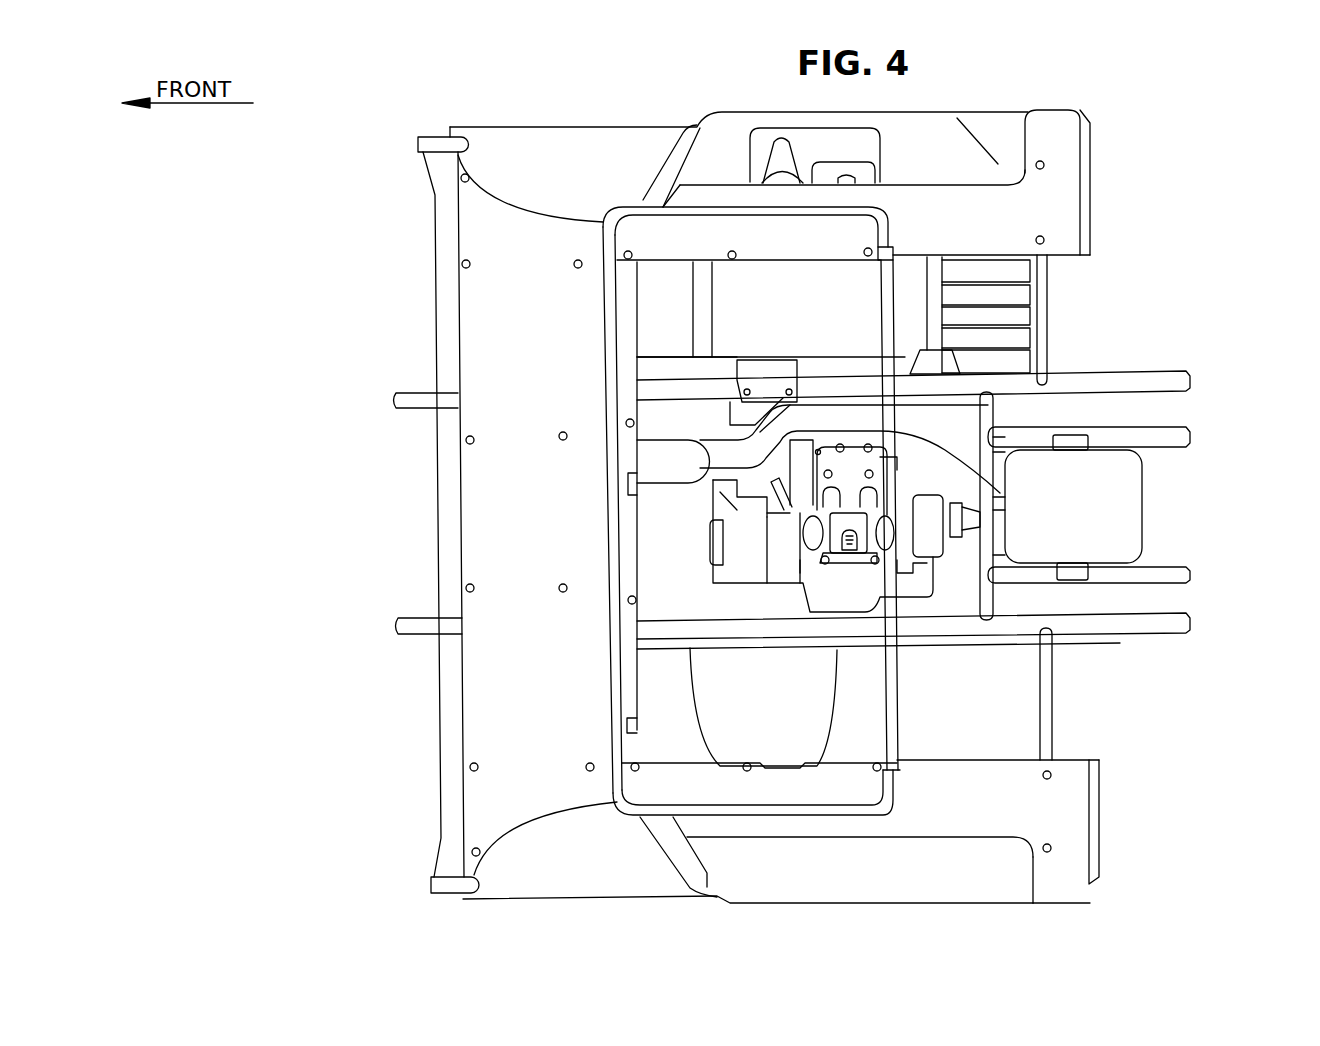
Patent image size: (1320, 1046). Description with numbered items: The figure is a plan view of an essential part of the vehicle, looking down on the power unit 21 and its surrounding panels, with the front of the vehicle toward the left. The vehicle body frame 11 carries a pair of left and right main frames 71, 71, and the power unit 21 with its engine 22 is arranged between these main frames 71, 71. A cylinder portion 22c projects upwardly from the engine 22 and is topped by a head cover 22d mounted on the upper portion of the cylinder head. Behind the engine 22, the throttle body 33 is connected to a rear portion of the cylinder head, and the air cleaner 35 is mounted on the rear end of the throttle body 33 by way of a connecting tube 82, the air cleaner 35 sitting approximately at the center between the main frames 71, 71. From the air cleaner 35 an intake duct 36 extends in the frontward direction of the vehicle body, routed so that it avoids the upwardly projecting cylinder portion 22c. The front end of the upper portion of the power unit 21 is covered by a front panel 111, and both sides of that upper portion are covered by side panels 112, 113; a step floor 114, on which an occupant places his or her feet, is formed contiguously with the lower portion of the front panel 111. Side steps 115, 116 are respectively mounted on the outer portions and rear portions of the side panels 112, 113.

The vehicle body frame 11 is at (437, 692).
The power unit 21 is at (898, 601).
The engine 22 is at (898, 482).
The cylinder portion 22c is at (885, 454).
The head cover 22d is at (960, 470).
The throttle body 33 is at (940, 548).
The air cleaner 35 is at (1133, 507).
The intake duct 36 is at (720, 445).
The main frame 71 is at (1158, 378).
The connecting tube 82 is at (977, 520).
The front panel 111 is at (598, 343).
The side panel 112 is at (1100, 820).
The side panel 113 is at (1098, 190).
The step floor 114 is at (497, 528).
The side step 115 is at (1072, 890).
The side step 116 is at (1053, 125).